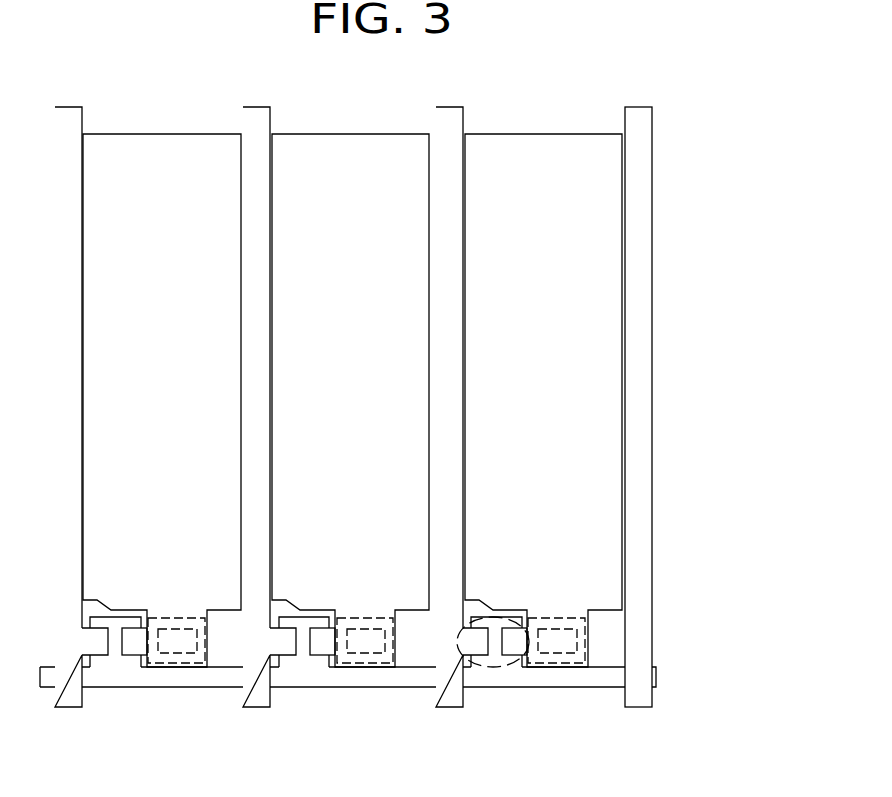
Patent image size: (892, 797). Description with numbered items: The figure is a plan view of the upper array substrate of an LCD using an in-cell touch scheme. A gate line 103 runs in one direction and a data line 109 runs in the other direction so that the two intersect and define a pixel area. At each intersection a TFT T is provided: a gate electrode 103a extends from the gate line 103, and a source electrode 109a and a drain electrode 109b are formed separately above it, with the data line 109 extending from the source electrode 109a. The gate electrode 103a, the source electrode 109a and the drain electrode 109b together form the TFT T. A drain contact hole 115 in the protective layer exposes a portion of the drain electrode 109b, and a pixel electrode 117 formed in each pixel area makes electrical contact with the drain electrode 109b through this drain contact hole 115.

The gate line 103 is at (603, 677).
The gate electrode 103a is at (499, 627).
The data line 109 is at (637, 266).
The source electrode 109a is at (475, 645).
The drain electrode 109b is at (512, 647).
The drain contact hole 115 is at (555, 650).
The pixel electrode 117 is at (602, 186).
The TFT T is at (523, 613).